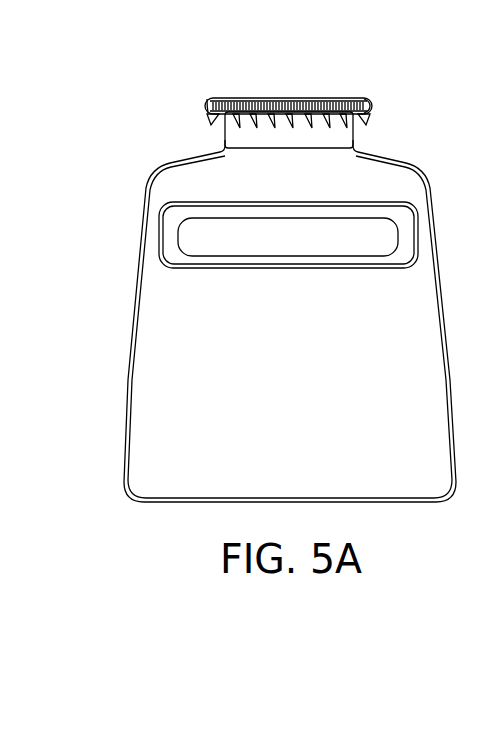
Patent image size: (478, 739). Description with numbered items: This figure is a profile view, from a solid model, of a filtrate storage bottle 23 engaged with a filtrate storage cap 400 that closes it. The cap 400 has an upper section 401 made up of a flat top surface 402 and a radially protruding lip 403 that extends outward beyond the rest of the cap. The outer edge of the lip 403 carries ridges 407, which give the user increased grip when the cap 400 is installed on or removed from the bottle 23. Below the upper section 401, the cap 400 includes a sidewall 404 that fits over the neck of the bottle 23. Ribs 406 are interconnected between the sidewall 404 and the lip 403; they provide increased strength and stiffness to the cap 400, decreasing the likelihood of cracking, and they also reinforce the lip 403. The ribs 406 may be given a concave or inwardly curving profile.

The bottle 23 is at (137, 311).
The storage cap 400 is at (282, 93).
The upper section 401 is at (203, 94).
The flat top surface 402 is at (308, 98).
The radially protruding lip 403 is at (363, 98).
The sidewall 404 is at (287, 138).
The ribs 406 is at (225, 118).
The ridges 407 is at (373, 108).